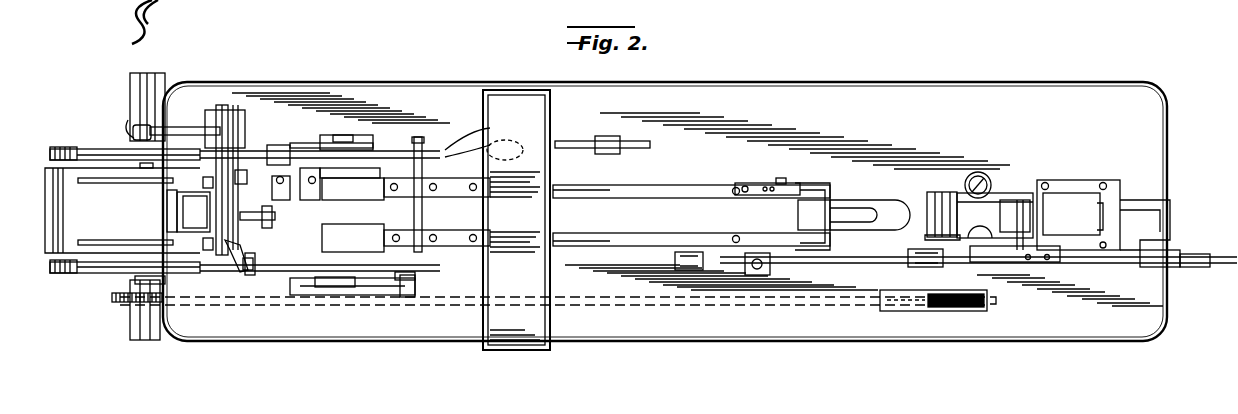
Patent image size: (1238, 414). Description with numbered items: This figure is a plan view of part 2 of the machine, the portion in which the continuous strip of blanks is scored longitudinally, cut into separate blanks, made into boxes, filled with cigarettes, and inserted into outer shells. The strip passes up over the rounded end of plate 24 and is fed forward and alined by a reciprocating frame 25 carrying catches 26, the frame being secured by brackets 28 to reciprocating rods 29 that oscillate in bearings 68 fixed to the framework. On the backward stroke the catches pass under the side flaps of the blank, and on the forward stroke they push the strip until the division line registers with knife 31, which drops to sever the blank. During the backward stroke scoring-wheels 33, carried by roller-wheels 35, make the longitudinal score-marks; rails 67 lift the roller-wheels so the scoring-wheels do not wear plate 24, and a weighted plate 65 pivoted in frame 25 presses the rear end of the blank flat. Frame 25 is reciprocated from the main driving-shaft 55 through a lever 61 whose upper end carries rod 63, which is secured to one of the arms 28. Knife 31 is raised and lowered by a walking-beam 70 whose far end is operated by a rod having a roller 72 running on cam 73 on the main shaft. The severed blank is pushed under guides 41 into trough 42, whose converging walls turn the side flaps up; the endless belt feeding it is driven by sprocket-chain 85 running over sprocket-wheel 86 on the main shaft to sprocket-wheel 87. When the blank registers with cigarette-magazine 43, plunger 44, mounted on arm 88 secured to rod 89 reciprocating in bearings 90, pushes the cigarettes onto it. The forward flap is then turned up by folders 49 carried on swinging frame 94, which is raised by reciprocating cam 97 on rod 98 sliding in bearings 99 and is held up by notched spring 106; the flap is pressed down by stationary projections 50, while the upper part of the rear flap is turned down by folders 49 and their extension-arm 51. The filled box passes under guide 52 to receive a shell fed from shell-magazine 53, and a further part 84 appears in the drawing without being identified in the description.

The part of machine 2 is at (665, 211).
The plate 24 is at (122, 210).
The reciprocating frame 25 is at (203, 190).
The catches 26 is at (168, 228).
The brackets 28 is at (232, 268).
The reciprocating rods 29 is at (95, 148).
The knife 31 is at (318, 180).
The scoring-wheels 33 is at (230, 195).
The roller-wheels 35 is at (230, 182).
The guides 41 is at (353, 215).
The trough 42 is at (583, 215).
The cigarette-magazine 43 is at (515, 93).
The plunger 44 is at (412, 206).
The folder 49 is at (808, 224).
The projections 50 is at (878, 200).
The extension-arm 51 is at (852, 207).
The guide 52 is at (930, 215).
The shell-magazine 53 is at (1070, 192).
The main driving-shaft 55 is at (135, 281).
The lever 61 is at (402, 297).
The rod 63 is at (415, 283).
The plate 65 is at (193, 212).
The rails 67 is at (120, 183).
The bearings 68 is at (60, 148).
The walking-beam 70 is at (180, 128).
The roller 72 is at (133, 99).
The cam 73 is at (129, 130).
The block 84 is at (245, 127).
The sprocket-chain 85 is at (737, 305).
The sprocket-wheel 86 is at (115, 302).
The sprocket-wheel 87 is at (950, 312).
The arm 88 is at (422, 167).
The rod 89 is at (565, 141).
The bearings 90 is at (346, 136).
The swinging frame 94 is at (818, 186).
The reciprocating cam 97 is at (775, 273).
The reciprocating rod 98 is at (1222, 257).
The bearings 99 is at (675, 261).
The spring 106 is at (778, 185).